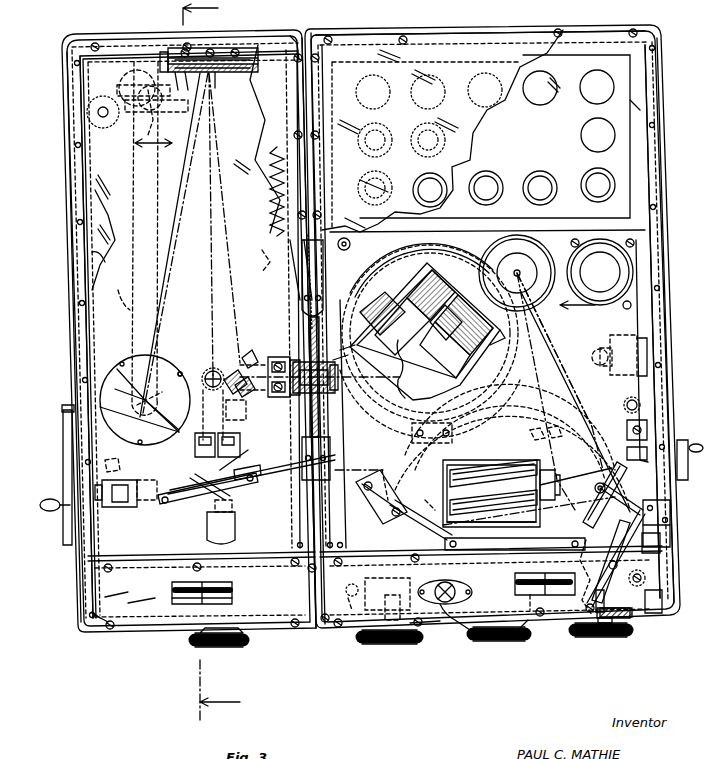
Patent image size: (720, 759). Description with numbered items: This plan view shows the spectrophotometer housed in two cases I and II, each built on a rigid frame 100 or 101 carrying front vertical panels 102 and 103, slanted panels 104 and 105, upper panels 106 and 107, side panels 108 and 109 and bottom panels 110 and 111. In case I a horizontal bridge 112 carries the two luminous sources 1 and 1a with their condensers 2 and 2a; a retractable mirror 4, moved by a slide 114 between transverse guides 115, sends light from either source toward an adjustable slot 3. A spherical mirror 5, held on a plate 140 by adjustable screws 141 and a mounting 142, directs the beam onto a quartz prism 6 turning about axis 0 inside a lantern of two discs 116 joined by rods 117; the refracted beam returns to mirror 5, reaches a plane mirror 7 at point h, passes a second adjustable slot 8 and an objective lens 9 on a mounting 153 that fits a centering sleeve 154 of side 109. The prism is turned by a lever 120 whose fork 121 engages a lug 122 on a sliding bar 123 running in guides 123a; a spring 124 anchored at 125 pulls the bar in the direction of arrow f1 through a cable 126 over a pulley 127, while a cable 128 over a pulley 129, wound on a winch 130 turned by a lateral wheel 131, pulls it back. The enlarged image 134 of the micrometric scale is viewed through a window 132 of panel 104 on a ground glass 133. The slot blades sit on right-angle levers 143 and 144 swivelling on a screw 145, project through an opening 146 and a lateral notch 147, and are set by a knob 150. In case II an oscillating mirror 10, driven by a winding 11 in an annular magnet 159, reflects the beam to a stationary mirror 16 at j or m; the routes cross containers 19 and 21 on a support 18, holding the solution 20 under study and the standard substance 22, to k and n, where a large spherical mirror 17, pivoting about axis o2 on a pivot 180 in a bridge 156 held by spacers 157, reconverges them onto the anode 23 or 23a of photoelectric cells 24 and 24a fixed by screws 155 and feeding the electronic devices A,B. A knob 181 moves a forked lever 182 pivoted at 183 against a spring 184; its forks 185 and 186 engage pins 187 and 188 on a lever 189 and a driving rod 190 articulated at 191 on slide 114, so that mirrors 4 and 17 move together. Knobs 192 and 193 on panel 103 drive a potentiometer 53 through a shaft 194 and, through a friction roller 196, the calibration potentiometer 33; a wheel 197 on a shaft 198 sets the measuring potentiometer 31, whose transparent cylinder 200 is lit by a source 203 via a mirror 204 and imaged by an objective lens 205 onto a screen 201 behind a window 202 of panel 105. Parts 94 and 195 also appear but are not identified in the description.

The luminous source 1 is at (242, 512).
The luminous source 1a is at (112, 508).
The condenser 2 is at (206, 522).
The condenser 2a is at (145, 503).
The adjustable slot 3 is at (240, 456).
The retractable mirror 4 is at (194, 470).
The spherical mirror 5 is at (186, 81).
The quartz prism 6 is at (548, 705).
The plane mirror 7 is at (253, 356).
The adjustable slot 8 is at (290, 405).
The objective lens 9 is at (274, 232).
The oscillating mirror 10 is at (395, 385).
The winding 11 is at (446, 350).
The stationary mirror 16 is at (372, 488).
The large spherical mirror 17 is at (593, 512).
The support 18 is at (452, 462).
The container 19 is at (495, 468).
The solution 20 is at (524, 480).
The container 21 is at (455, 512).
The standard substance 22 is at (470, 500).
The anode 23 is at (554, 373).
The anode 23a is at (600, 272).
The photo-electric cell 24 is at (512, 248).
The photo-electric cell 24a is at (612, 240).
The measuring potentiometer 31 is at (578, 410).
The calibration potentiometer 33 is at (380, 268).
The potentiometer 53 is at (395, 580).
The coupling 94 is at (445, 611).
The rigid frame 100 is at (80, 246).
The rigid frame 101 is at (648, 110).
The front vertical panel 102 is at (80, 349).
The front vertical panel 103 is at (432, 628).
The slanted panel 104 is at (108, 625).
The slanted panel 105 is at (336, 626).
The upper panel 106 is at (272, 52).
The upper panel 107 is at (362, 52).
The side panel 108 is at (64, 186).
The side panel 109 is at (660, 180).
The bottom panel 110 is at (108, 210).
The bottom panel 111 is at (650, 222).
The horizontal bridge 112 is at (82, 322).
The slide 114 is at (170, 505).
The transverse guides 115 is at (250, 470).
The discs 116 is at (170, 370).
The rods 117 is at (180, 378).
The lever 120 is at (120, 294).
The fork 121 is at (154, 86).
The lug 122 is at (160, 128).
The sliding bar 123 is at (128, 114).
The sliding guides 123a is at (128, 85).
The spring 124 is at (268, 236).
The attachment point 125 is at (254, 261).
The cable 126 is at (255, 145).
The pulley 127 is at (243, 135).
The cable 128 is at (106, 262).
The pulley 129 is at (100, 125).
The small winch 130 is at (118, 462).
The lateral operating wheel 131 is at (62, 414).
The window 132 is at (225, 590).
The ground glass 133 is at (232, 600).
The enlarged image 134 is at (172, 585).
The plate 140 is at (195, 64).
The adjustable screws 141 is at (235, 48).
The mounting 142 is at (160, 62).
The right-angle lever 143 is at (182, 420).
The right-angle lever 144 is at (240, 396).
The screw 145 is at (214, 370).
The opening 146 is at (236, 420).
The lateral notch 147 is at (276, 355).
The operating knob 150 is at (215, 650).
The mounting 153 is at (296, 398).
The centering sleeve 154 is at (334, 395).
The screws 155 is at (616, 312).
The bridge 156 is at (640, 324).
The spacers 157 is at (490, 400).
The permanent annular magnet 159 is at (468, 360).
The pivot 180 is at (615, 540).
The operating knob 181 is at (615, 640).
The forked lever 182 is at (605, 590).
The fixed pivot 183 is at (638, 585).
The spring 184 is at (662, 550).
The fork 185 is at (656, 523).
The fork 186 is at (630, 618).
The pin 187 is at (656, 524).
The pin 188 is at (598, 632).
The lever 189 is at (584, 548).
The driving rod 190 is at (372, 536).
The articulation 191 is at (258, 472).
The operating knob 192 is at (372, 642).
The operating knob 193 is at (478, 642).
The shaft 194 is at (376, 600).
The contact 195 is at (430, 514).
The friction roller 196 is at (420, 425).
The wheel 197 is at (684, 440).
The shaft 198 is at (676, 468).
The transparent cylinder 200 is at (512, 445).
The screen 201 is at (532, 600).
The window 202 is at (520, 630).
The luminous source 203 is at (620, 340).
The mirror 204 is at (575, 372).
The objective lens 205 is at (557, 440).
The electronic devices A,B is at (489, 139).
The case I is at (188, 263).
The case II is at (460, 229).
The arrow f1 is at (153, 151).
The point h is at (250, 372).
The point j is at (383, 485).
The point k is at (605, 489).
The point m is at (406, 497).
The point n is at (529, 496).
The axis O2 o2 is at (594, 481).
The axis 01 0 is at (138, 383).